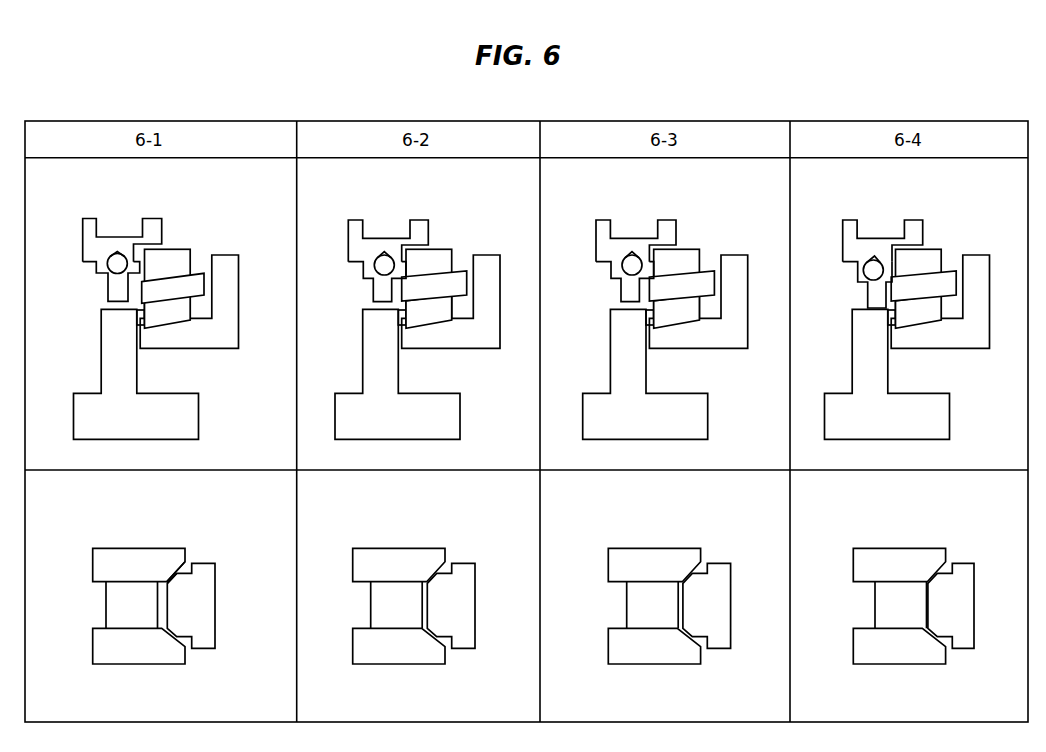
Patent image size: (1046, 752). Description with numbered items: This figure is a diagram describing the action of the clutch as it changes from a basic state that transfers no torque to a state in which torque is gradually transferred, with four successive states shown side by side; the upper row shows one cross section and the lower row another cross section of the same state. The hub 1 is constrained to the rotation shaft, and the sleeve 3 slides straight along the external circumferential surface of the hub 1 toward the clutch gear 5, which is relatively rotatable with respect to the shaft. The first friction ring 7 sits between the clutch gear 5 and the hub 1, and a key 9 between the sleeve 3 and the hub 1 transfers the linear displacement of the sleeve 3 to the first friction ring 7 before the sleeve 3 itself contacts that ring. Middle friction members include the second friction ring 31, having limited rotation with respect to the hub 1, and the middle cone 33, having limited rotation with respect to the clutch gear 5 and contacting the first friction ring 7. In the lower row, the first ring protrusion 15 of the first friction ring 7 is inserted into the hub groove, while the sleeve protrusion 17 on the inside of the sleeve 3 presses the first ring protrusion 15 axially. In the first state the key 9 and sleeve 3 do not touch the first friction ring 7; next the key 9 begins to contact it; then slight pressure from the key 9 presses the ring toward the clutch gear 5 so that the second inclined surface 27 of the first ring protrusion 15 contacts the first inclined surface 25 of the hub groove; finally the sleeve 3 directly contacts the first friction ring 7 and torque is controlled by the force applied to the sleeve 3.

The hub 1 is at (108, 360).
The sleeve 3 is at (89, 224).
The clutch gear 5 is at (227, 262).
The first friction ring 7 is at (182, 252).
The key 9 is at (108, 284).
The first ring protrusion 15 is at (173, 603).
The sleeve protrusion 17 is at (115, 604).
The first inclined surface 25 is at (160, 573).
The second inclined surface 27 is at (187, 572).
The second friction ring 31 is at (175, 315).
The middle cone 33 is at (197, 285).